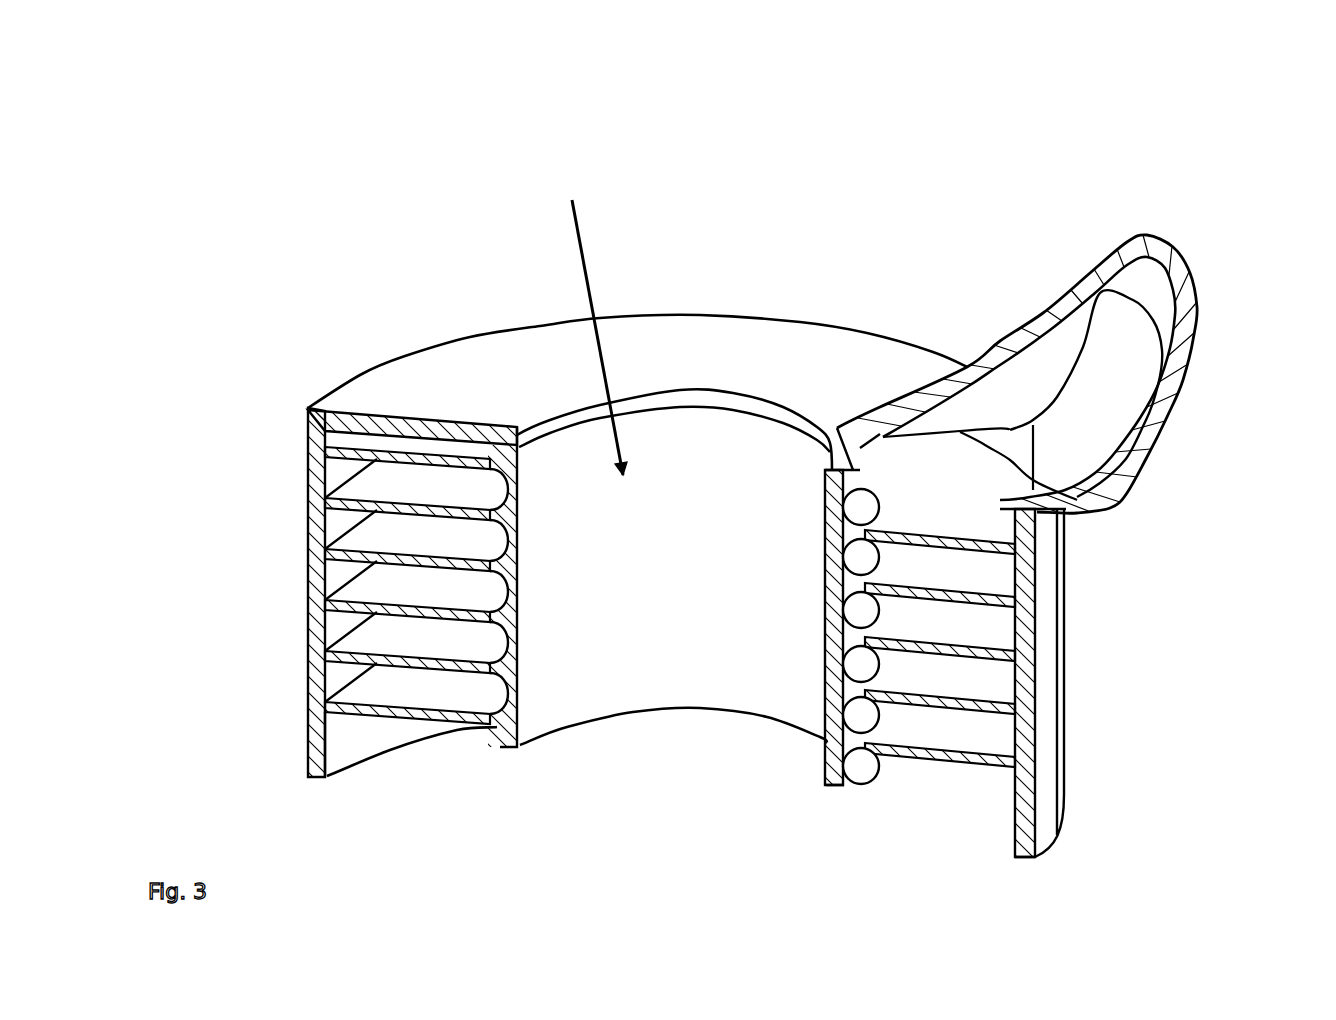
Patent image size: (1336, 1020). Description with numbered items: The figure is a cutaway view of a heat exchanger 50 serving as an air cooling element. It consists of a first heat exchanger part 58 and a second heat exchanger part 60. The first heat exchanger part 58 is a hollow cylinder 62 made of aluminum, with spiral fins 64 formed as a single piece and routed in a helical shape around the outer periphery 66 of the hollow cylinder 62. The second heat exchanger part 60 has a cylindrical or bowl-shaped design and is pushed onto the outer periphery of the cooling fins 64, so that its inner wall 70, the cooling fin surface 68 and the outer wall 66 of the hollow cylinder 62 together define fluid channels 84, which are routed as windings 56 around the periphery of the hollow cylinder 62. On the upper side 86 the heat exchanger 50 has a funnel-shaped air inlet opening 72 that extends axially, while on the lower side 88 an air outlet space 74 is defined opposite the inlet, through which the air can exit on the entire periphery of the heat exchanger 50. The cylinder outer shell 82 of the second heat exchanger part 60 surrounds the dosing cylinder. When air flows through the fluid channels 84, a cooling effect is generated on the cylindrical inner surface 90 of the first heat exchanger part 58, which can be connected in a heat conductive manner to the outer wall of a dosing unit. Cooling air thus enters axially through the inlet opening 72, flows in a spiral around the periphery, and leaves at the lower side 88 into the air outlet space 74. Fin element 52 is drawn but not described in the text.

The heat exchanger 50 is at (734, 478).
The outer fins 52 is at (935, 620).
The windings 56 is at (516, 648).
The first heat exchanger part 58 is at (693, 664).
The second heat exchanger part 60 is at (416, 393).
The hollow cylinder 62 is at (694, 581).
The spiral fins 64 is at (333, 546).
The outer periphery 66 is at (870, 720).
The cooling fin surface 68 is at (923, 490).
The inner wall 70 is at (372, 726).
The air inlet opening 72 is at (1093, 383).
The air outlet space 74 is at (417, 760).
The cylinder outer shell 82 is at (1045, 808).
The fluid channels 84 is at (446, 596).
The upper side 86 is at (758, 355).
The lower side 88 is at (758, 715).
The inner surface 90 is at (592, 326).